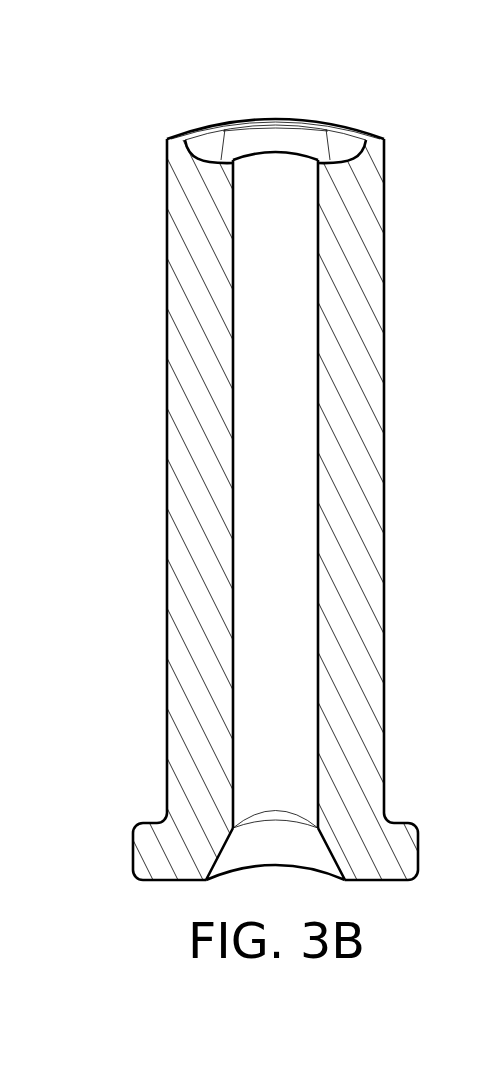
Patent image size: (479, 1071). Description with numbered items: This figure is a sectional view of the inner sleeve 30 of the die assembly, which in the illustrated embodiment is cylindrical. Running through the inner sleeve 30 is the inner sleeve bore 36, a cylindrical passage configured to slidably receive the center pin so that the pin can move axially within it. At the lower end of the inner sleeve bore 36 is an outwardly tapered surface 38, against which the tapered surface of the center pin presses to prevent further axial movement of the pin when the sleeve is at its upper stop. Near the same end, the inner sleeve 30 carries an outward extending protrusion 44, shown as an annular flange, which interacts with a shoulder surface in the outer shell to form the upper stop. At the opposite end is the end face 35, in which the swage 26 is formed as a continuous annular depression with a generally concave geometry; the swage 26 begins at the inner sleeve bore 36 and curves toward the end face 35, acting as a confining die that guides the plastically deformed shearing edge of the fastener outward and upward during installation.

The inner sleeve 30 is at (386, 249).
The end face 35 is at (179, 137).
The swage 26 is at (346, 162).
The inner sleeve bore 36 is at (318, 498).
The protrusion 44 is at (397, 822).
The inner sleeve tapered surface 38 is at (333, 857).